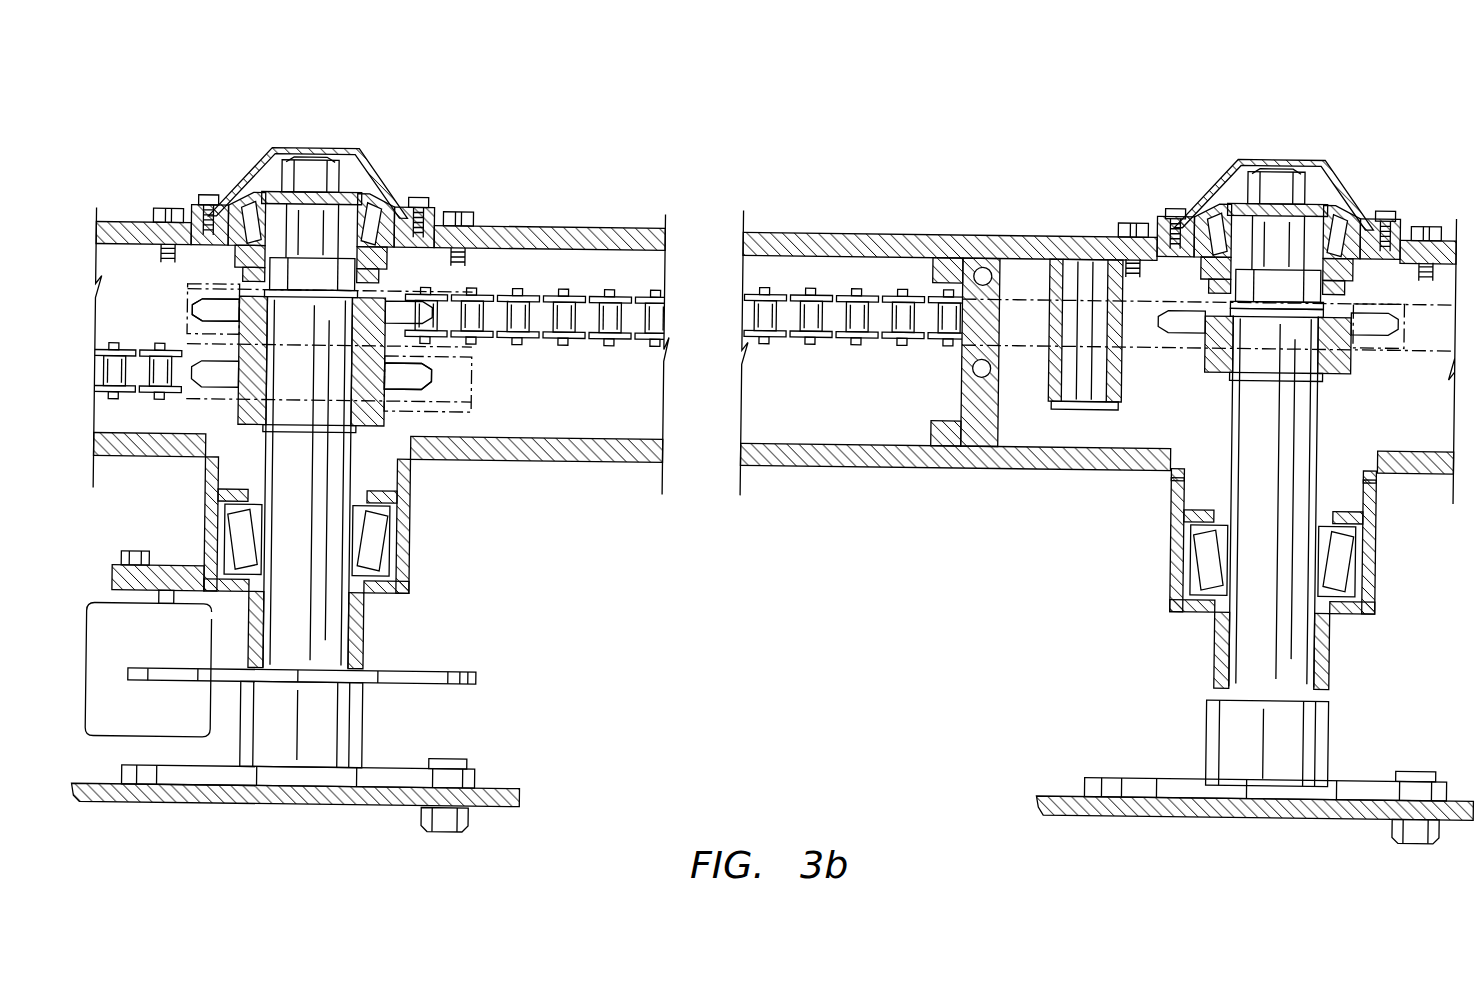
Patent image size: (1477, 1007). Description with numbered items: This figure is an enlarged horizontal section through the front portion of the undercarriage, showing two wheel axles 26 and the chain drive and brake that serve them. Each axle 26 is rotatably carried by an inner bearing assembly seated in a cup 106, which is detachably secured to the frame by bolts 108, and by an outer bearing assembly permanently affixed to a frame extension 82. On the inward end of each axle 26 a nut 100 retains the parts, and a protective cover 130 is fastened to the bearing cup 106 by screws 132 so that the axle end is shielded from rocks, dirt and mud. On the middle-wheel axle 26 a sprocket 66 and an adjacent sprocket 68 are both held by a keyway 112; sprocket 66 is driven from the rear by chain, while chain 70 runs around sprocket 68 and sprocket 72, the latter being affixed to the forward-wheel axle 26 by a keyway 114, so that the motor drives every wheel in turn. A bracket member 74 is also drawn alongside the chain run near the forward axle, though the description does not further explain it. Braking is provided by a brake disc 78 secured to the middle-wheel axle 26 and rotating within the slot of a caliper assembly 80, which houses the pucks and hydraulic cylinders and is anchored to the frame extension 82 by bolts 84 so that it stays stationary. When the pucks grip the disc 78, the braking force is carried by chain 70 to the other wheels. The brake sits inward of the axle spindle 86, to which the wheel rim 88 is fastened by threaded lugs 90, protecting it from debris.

The axle 26 is at (318, 484).
The sprocket 66 is at (430, 374).
The sprocket 68 is at (235, 300).
The chain 70 is at (780, 296).
The sprocket 72 is at (1365, 324).
The bracket 74 is at (970, 333).
The brake disc 78 is at (475, 672).
The caliper assembly 80 is at (163, 724).
The frame extension 82 is at (400, 554).
The bolt 84 is at (138, 554).
The axle spindle 86 is at (373, 768).
The wheel rim 88 is at (510, 792).
The threaded lug 90 is at (456, 822).
The nut 100 is at (330, 170).
The cup 106 is at (398, 246).
The bolt 108 is at (164, 210).
The keyway 112 is at (352, 408).
The keyway 114 is at (1326, 370).
The protective cover 130 is at (318, 142).
The screw 132 is at (205, 195).